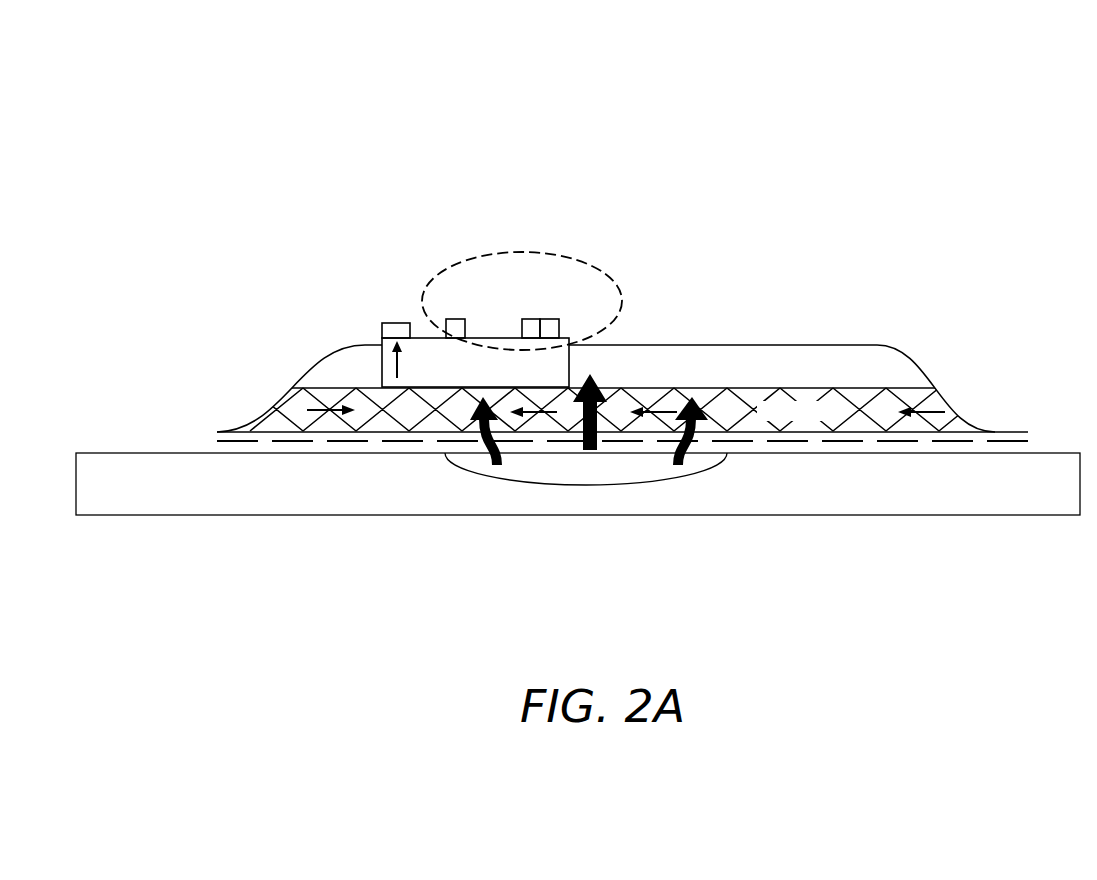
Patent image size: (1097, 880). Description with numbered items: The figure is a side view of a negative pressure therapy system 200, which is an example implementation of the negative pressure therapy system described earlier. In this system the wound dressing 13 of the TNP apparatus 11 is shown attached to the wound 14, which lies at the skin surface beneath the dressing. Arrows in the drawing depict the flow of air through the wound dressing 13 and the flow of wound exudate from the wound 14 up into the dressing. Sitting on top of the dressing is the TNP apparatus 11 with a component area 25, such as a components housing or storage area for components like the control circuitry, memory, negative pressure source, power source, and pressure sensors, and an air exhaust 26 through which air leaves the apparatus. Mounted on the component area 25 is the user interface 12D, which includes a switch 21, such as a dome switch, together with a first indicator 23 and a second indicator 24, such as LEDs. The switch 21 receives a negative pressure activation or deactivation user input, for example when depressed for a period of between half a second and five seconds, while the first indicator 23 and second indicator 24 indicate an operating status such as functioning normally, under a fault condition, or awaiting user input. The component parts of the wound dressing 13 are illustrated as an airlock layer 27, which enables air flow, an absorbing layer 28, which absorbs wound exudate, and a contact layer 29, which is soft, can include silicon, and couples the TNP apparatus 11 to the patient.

The negative pressure therapy system 200 is at (154, 80).
The TNP apparatus 11 is at (682, 344).
The user interface 12D is at (540, 250).
The wound dressing 13 is at (733, 397).
The wound 14 is at (659, 467).
The switch 21 is at (455, 318).
The first indicator 23 is at (532, 318).
The second indicator 24 is at (552, 318).
The component area 25 is at (413, 393).
The air exhaust 26 is at (397, 322).
The airlock layer 27 is at (895, 418).
The absorbing layer 28 is at (862, 358).
The contact layer 29 is at (948, 412).